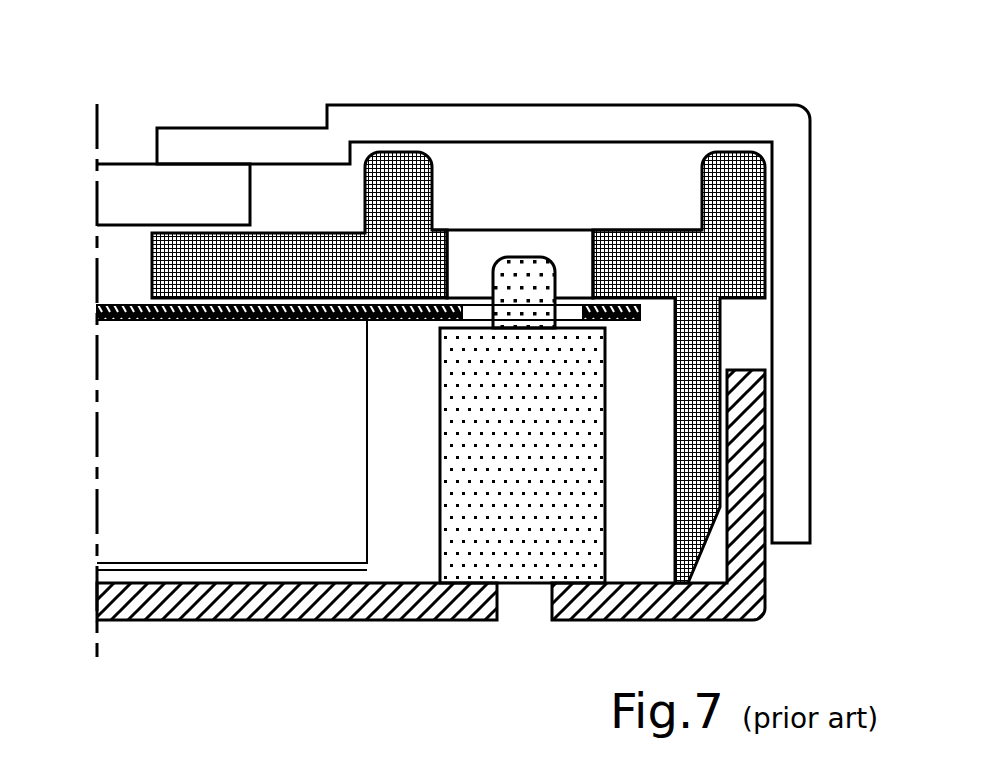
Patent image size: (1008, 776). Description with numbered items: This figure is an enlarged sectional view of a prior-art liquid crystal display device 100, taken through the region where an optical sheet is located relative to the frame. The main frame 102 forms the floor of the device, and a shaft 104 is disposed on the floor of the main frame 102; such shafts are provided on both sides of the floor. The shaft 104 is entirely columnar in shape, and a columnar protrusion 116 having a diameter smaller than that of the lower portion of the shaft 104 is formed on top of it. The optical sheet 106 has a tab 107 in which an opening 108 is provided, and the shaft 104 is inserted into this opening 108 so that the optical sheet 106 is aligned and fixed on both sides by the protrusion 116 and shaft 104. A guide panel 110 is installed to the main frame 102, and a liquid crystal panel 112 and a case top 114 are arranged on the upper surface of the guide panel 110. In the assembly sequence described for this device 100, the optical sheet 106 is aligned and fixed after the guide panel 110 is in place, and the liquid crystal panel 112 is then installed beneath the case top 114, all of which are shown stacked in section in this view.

The liquid crystal display device 100 is at (87, 82).
The main frame 102 is at (228, 620).
The shaft 104 is at (519, 557).
The optical sheet 106 is at (312, 305).
The tab 107 is at (640, 320).
The opening 108 is at (578, 312).
The guide panel 110 is at (733, 185).
The liquid crystal panel 112 is at (173, 202).
The case top 114 is at (806, 175).
The columnar protrusion 116 is at (512, 283).